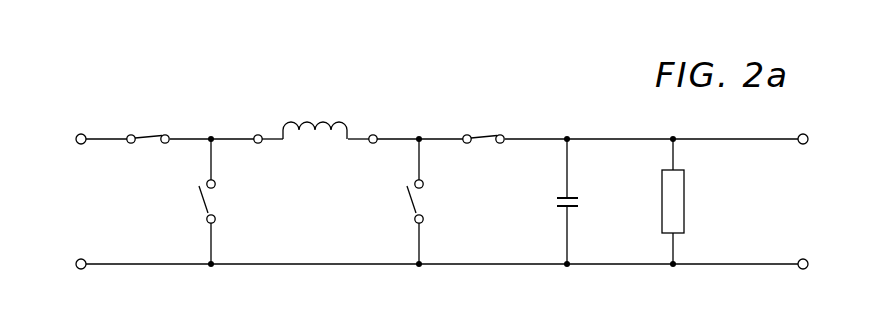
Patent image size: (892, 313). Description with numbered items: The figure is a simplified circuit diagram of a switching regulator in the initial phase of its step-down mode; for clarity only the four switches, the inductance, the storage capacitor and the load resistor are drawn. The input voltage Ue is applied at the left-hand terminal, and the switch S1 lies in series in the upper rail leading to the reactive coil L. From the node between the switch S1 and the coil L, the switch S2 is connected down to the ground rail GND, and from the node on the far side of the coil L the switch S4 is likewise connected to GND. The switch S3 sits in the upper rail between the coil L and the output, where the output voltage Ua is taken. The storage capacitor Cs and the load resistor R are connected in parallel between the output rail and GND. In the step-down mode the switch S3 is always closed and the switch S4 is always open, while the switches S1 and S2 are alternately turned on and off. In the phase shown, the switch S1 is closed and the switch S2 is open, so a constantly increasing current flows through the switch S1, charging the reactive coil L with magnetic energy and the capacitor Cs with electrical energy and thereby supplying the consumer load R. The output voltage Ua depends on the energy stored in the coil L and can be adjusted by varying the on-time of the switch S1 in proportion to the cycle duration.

The input voltage Ue is at (64, 140).
The switch S1 is at (148, 124).
The inductance (reactive coil) L is at (315, 115).
The switch S3 is at (483, 125).
The switch S2 is at (223, 201).
The switch S4 is at (431, 201).
The storage capacitor Cs is at (584, 201).
The load resistor R is at (684, 201).
The output voltage Ua is at (821, 139).
The ground GND is at (470, 265).